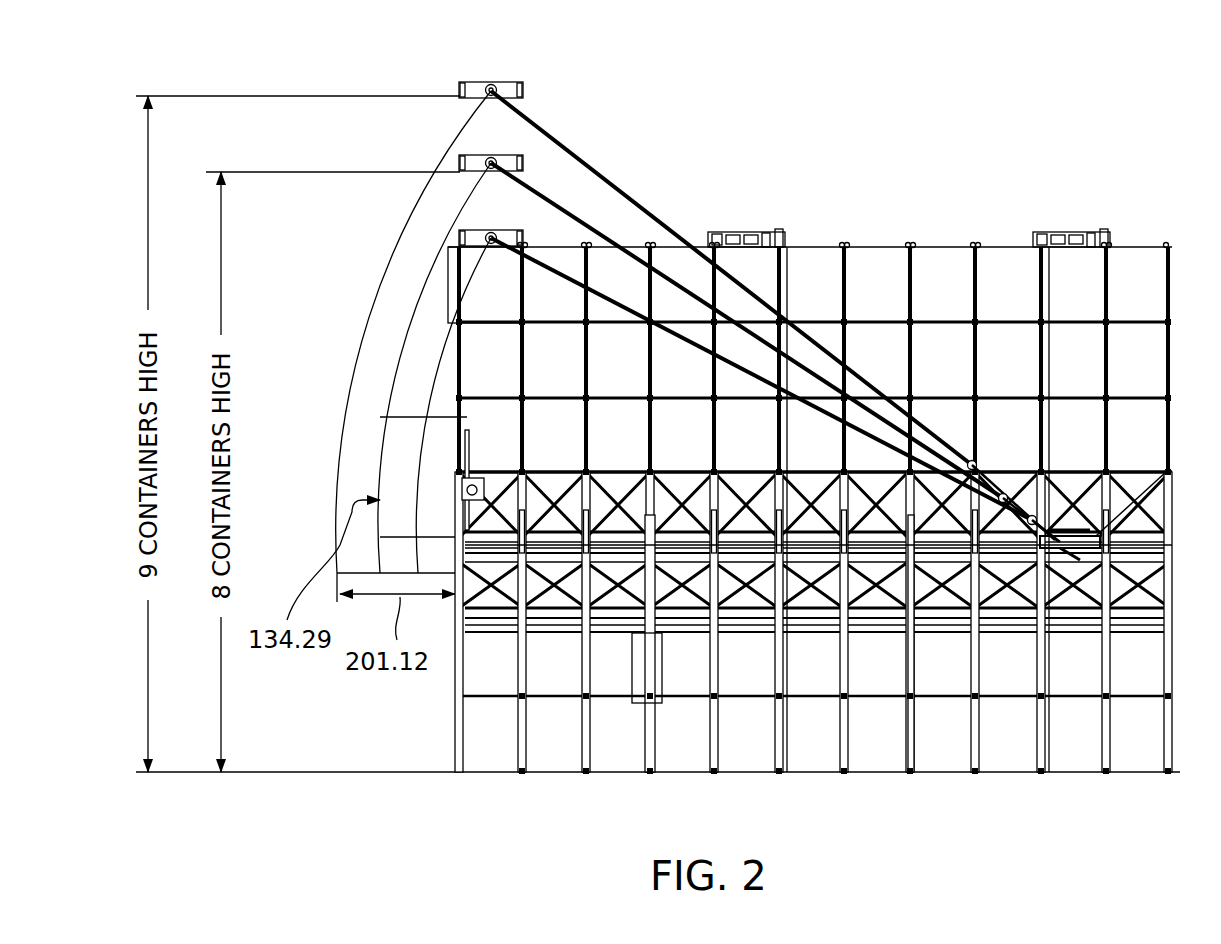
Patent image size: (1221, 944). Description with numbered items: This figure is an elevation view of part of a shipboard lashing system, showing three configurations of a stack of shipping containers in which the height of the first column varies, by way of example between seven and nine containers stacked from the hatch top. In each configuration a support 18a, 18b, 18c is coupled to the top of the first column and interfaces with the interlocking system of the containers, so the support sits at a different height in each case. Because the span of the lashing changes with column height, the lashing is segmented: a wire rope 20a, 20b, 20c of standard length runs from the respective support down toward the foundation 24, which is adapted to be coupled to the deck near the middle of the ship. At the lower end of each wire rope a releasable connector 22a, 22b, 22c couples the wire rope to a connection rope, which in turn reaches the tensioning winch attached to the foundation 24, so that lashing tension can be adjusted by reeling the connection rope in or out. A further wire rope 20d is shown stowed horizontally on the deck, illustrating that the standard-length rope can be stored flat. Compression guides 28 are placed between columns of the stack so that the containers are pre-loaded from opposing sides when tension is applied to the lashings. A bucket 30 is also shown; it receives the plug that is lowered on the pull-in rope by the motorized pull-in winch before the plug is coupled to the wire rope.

The support 18a is at (457, 88).
The support 18b is at (457, 162).
The support 18c is at (457, 240).
The wire rope 20a is at (600, 170).
The wire rope 20b is at (553, 192).
The wire rope 20c is at (603, 293).
The wire rope 20d is at (625, 545).
The releasable connector 22a is at (970, 458).
The releasable connector 22b is at (1003, 490).
The releasable connector 22c is at (1038, 514).
The foundation 24 is at (1058, 548).
The compression guide 28 is at (761, 229).
The bucket 30 is at (457, 478).